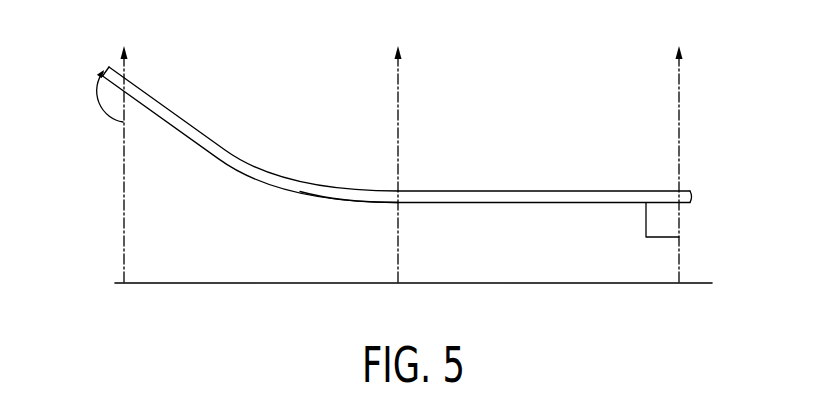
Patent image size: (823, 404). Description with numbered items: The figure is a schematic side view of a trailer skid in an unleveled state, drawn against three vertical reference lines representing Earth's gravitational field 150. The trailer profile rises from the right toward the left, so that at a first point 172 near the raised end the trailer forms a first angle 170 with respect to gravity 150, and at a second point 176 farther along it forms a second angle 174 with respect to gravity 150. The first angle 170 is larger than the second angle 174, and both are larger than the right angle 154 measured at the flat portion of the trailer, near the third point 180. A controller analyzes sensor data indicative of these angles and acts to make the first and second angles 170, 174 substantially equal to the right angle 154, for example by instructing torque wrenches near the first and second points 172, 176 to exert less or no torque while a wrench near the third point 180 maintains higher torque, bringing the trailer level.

The Earth's gravitational field 150 is at (123, 171).
The right angle 154 is at (646, 218).
The first angle 170 is at (98, 100).
The first point 172 is at (123, 78).
The second angle 174 is at (398, 228).
The second point 176 is at (399, 191).
The third point 180 is at (678, 191).